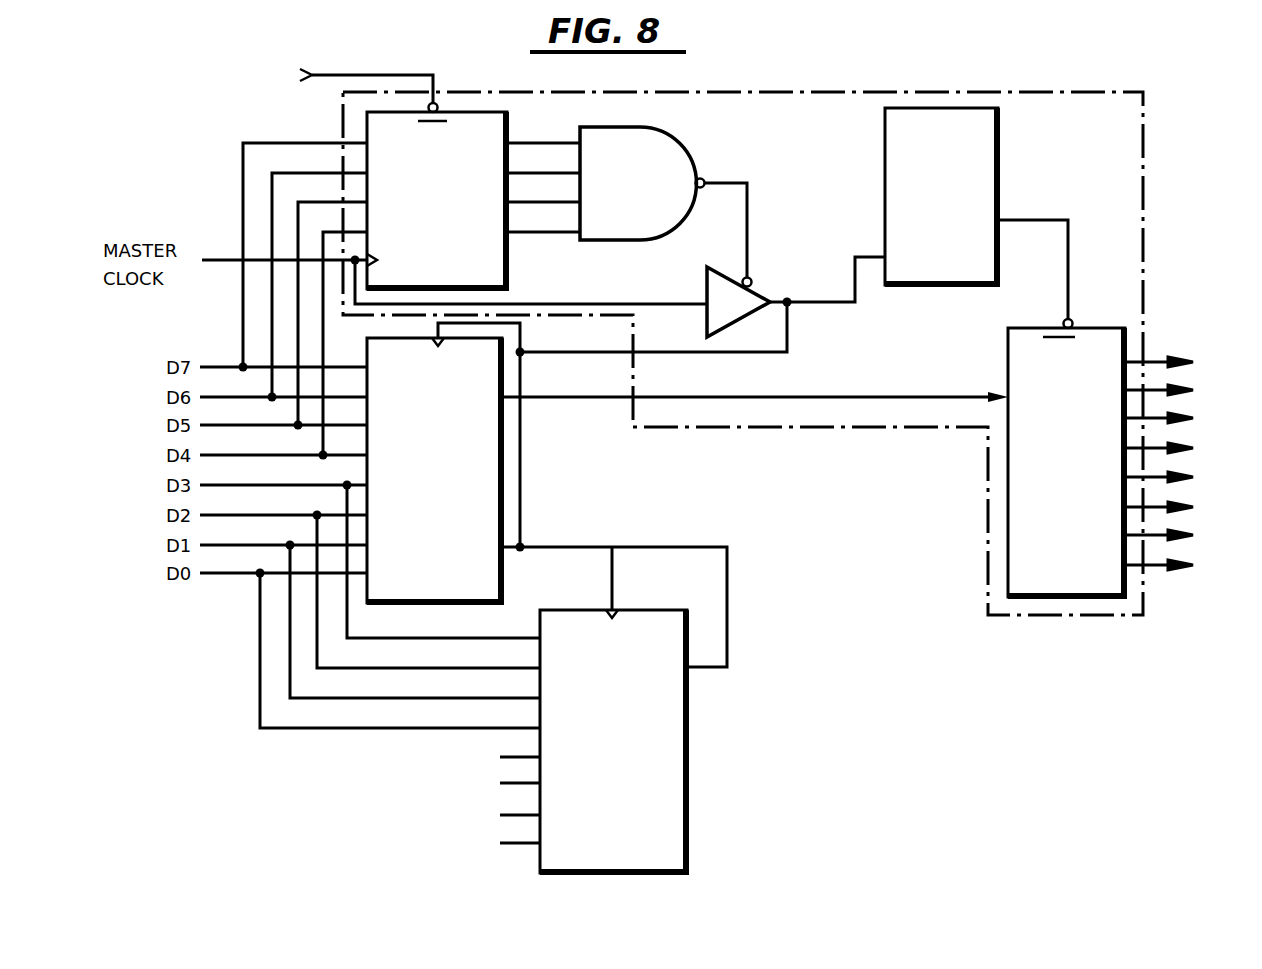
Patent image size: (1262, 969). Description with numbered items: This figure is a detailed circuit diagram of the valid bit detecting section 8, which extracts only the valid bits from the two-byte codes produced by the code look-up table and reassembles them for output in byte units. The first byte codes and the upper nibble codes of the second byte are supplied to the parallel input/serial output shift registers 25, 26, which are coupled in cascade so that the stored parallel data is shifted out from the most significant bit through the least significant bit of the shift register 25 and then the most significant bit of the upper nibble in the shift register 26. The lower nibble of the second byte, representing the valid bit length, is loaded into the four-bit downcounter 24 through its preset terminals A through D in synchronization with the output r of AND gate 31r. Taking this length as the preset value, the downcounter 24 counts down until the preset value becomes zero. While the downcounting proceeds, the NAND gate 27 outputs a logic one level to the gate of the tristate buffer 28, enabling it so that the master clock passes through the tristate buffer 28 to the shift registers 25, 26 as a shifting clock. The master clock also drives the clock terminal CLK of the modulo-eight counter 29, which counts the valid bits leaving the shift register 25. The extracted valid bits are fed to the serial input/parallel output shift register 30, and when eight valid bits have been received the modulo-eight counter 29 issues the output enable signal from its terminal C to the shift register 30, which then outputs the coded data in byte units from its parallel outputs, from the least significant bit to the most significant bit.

The valid bit detecting section 8 is at (840, 428).
The 4-bit downcounter 24 is at (508, 268).
The parallel input/serial output shift register 25 is at (504, 578).
The parallel input/serial output shift register 26 is at (688, 734).
The NAND gate 27 is at (687, 151).
The tristate buffer 28 is at (768, 295).
The modulo-8 counter 29 is at (884, 173).
The serial input/parallel output shift register 30 is at (1045, 328).
The output r of AND gate 31 31r is at (347, 89).